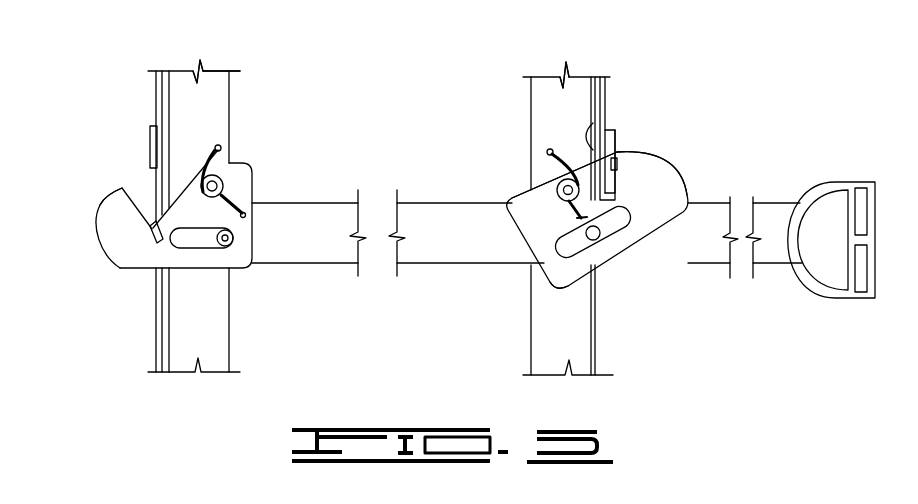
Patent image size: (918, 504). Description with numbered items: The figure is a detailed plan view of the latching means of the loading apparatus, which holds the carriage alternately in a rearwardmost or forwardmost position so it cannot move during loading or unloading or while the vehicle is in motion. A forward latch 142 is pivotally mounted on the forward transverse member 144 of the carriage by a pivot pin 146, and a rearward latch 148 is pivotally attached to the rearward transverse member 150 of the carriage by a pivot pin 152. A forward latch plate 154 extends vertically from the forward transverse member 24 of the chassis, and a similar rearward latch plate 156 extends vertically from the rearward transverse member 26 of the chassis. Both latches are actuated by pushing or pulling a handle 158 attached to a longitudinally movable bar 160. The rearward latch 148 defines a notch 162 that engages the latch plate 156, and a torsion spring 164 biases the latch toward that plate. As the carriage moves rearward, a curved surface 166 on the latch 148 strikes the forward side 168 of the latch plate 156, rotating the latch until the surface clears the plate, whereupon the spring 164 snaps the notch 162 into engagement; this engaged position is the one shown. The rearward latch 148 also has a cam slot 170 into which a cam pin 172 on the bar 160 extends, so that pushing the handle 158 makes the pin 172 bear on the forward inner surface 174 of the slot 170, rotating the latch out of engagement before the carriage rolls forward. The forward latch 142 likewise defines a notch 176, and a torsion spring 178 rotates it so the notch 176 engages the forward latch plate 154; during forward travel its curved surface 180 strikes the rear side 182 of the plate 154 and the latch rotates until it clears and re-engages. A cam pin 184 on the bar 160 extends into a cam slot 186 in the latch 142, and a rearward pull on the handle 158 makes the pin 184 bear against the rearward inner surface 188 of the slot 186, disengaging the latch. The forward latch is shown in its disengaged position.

The forward transverse member 24 is at (157, 309).
The rearward transverse member 26 is at (606, 341).
The forward latch 142 is at (115, 237).
The forward transverse member 144 is at (213, 83).
The pivot pin 146 is at (224, 182).
The rearward latch 148 is at (647, 180).
The rearward transverse member 150 is at (548, 90).
The pivot pin 152 is at (557, 191).
The forward latch plate 154 is at (150, 133).
The rearward latch plate 156 is at (607, 137).
The handle 158 is at (822, 183).
The longitudinally movable bar 160 is at (418, 212).
The notch 162 is at (613, 153).
The torsion spring 164 is at (520, 192).
The curved surface 166 is at (667, 172).
The forward side 168 is at (600, 120).
The cam slot 170 is at (605, 238).
The cam pin 172 is at (605, 240).
The forward inner surface 174 is at (565, 268).
The notch 176 is at (151, 200).
The torsion spring 178 is at (223, 152).
The curved surface 180 is at (105, 200).
The rear side 182 is at (160, 142).
The cam pin 184 is at (226, 248).
The cam slot 186 is at (195, 239).
The rearward inner surface 188 is at (230, 237).